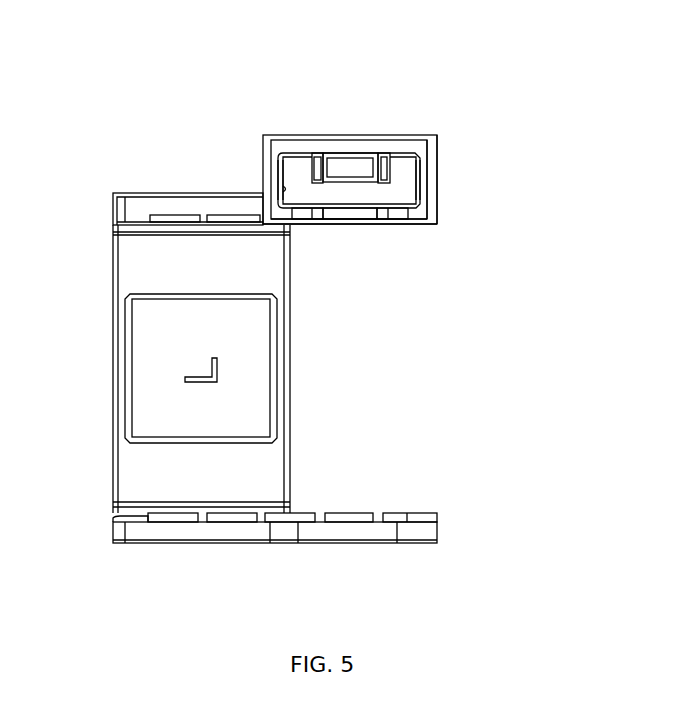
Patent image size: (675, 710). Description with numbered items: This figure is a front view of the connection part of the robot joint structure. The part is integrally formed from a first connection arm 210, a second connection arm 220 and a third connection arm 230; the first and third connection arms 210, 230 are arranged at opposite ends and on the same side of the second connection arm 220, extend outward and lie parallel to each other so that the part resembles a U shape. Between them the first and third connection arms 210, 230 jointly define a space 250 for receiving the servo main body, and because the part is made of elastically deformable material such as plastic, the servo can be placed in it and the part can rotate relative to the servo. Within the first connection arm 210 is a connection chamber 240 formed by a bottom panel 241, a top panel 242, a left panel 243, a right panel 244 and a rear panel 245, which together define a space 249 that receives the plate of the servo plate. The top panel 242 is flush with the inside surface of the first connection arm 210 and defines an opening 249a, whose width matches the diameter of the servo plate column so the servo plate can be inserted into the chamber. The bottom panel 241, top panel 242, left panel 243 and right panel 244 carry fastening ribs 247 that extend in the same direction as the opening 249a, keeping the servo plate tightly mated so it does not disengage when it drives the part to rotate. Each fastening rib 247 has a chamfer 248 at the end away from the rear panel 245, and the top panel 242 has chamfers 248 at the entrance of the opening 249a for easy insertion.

The first connection arm 210 is at (240, 207).
The second connection arm 220 is at (160, 278).
The third connection arm 230 is at (223, 530).
The connection chamber 240 is at (632, 62).
The bottom panel 241 is at (333, 152).
The top panel 242 is at (420, 217).
The left panel 243 is at (435, 205).
The right panel 244 is at (278, 178).
The rear panel 245 is at (402, 173).
The fastening rib 247 is at (408, 224).
The chamfer 248 is at (313, 225).
The space 249 is at (293, 185).
The opening 249a is at (353, 213).
The space 250 is at (318, 438).